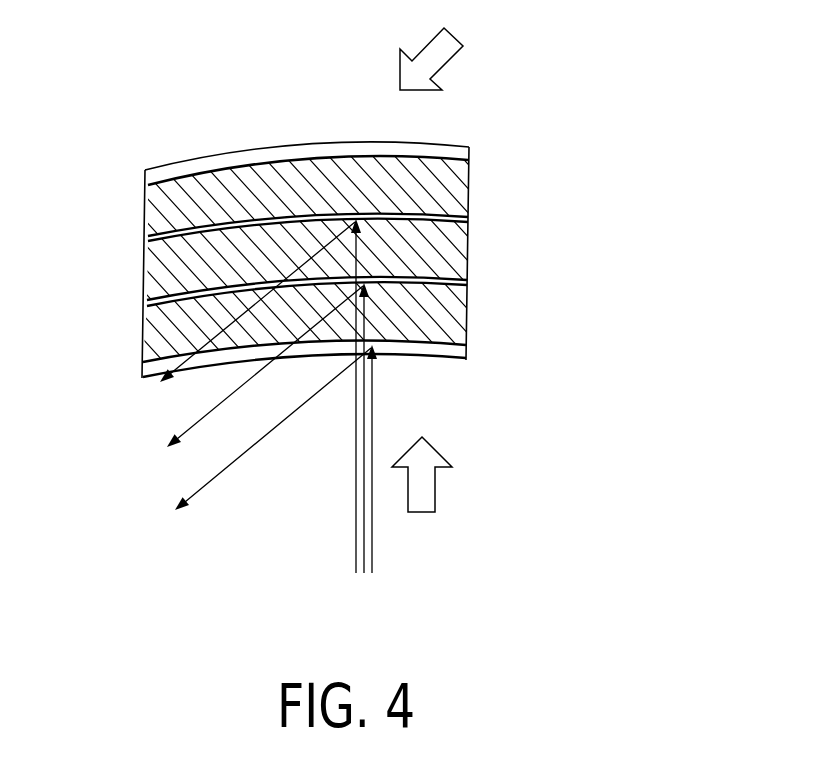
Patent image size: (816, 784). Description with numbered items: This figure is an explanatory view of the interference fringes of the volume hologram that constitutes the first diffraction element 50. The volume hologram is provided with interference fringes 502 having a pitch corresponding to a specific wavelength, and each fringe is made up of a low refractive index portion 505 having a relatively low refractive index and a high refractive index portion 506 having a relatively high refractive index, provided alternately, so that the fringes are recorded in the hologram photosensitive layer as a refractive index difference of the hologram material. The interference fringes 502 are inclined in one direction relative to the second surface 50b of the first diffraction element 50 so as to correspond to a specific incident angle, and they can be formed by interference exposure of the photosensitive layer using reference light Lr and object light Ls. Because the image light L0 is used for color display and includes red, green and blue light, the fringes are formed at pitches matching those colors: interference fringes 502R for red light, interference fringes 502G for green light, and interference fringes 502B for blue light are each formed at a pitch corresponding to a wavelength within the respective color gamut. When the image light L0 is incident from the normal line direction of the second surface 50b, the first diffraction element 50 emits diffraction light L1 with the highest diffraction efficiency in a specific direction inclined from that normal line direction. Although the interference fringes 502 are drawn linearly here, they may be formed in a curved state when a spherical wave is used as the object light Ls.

The first diffraction element 50 is at (408, 392).
The low refractive index portion 505 is at (265, 148).
The high refractive index portion 506 is at (313, 148).
The interference fringes 502 is at (408, 392).
The interference fringes for red light 502R is at (460, 186).
The interference fringes for green light 502G is at (462, 243).
The interference fringes for blue light 502B is at (358, 322).
The second surface 50b is at (456, 362).
The image light L0 is at (358, 431).
The diffraction light L1 is at (224, 379).
The reference light Lr is at (443, 48).
The object light Ls is at (434, 479).